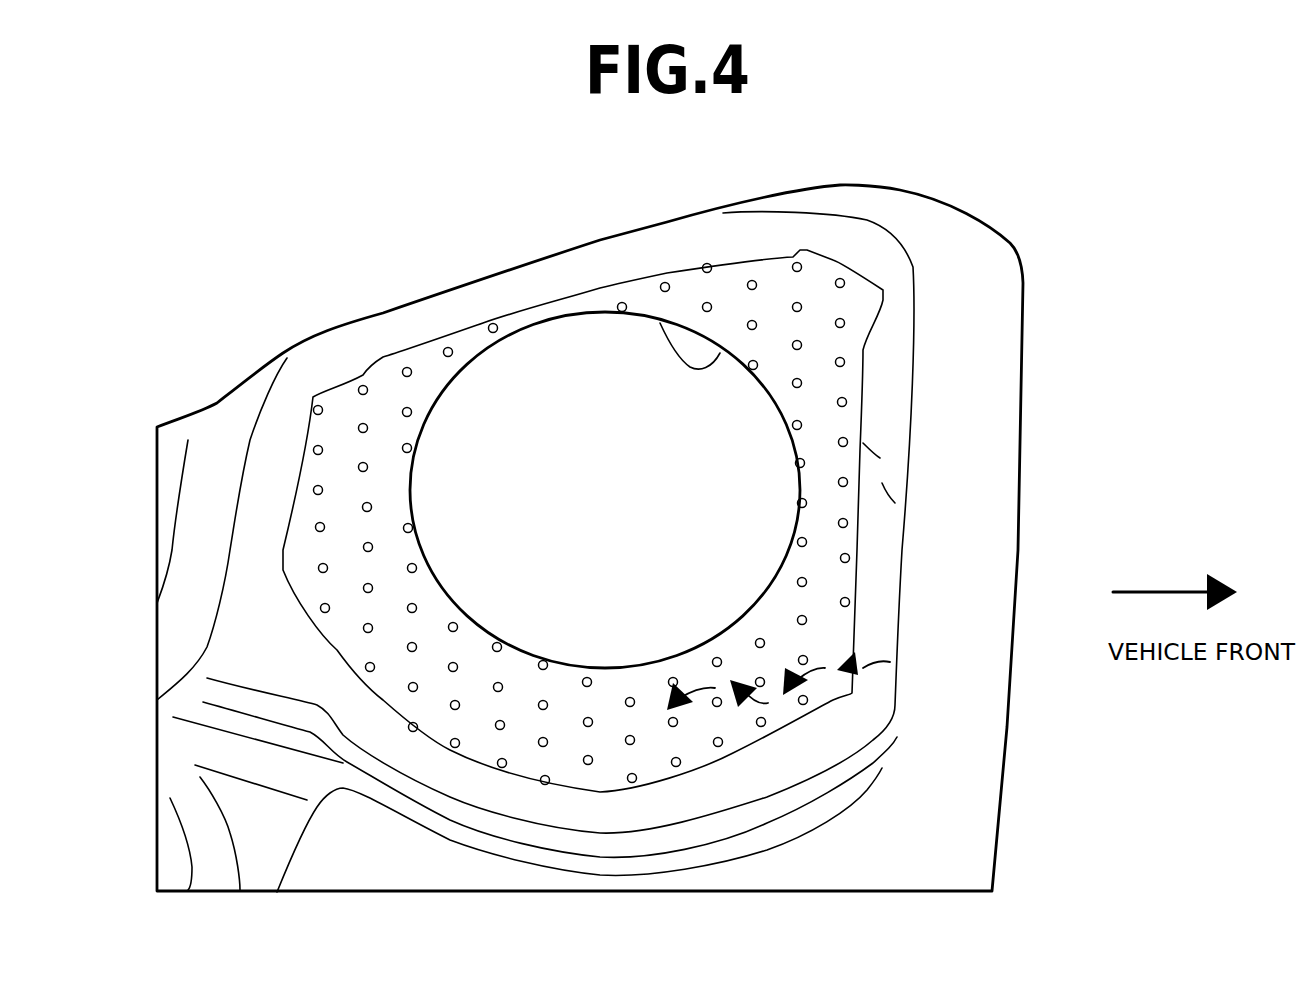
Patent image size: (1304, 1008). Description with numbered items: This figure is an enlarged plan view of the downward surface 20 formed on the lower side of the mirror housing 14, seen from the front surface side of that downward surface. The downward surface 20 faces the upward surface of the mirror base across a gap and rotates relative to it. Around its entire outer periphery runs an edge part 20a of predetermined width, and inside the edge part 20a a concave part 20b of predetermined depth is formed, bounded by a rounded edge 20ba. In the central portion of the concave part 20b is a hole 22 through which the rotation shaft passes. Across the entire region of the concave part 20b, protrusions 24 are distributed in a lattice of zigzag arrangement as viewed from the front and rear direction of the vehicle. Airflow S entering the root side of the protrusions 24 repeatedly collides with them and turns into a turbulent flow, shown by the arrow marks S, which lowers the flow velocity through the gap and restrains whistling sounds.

The mirror housing 14 is at (1120, 293).
The downward surface 20 is at (833, 322).
The edge part 20a is at (882, 483).
The concave part 20b is at (820, 410).
The edge of the concave part 20ba is at (863, 443).
The hole 22 is at (660, 323).
The protrusions 24 is at (808, 582).
The airflow S is at (870, 660).